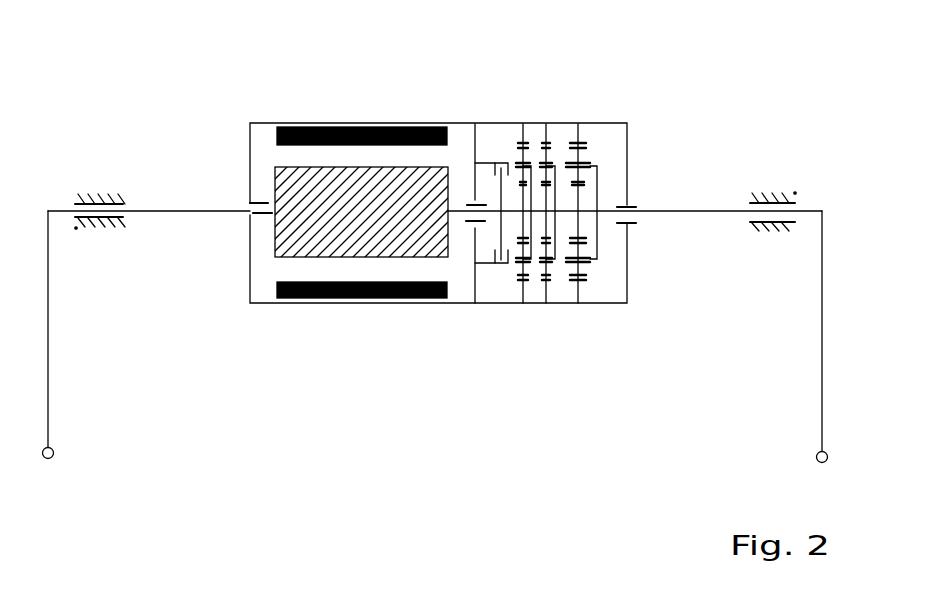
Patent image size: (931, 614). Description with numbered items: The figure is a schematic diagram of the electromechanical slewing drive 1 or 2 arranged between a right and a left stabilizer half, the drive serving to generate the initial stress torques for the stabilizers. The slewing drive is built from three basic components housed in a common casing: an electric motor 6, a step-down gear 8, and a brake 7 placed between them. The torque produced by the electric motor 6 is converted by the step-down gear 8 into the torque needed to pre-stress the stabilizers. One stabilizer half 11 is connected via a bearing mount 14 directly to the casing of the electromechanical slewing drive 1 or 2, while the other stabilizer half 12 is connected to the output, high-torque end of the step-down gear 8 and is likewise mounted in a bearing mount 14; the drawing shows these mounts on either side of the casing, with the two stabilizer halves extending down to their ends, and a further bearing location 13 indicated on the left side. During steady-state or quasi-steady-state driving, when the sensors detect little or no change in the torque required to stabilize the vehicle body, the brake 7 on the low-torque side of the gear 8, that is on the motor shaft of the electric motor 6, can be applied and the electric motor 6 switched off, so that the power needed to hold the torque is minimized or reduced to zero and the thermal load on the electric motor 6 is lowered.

The electromechanical slewing drive 1 is at (345, 185).
The electromechanical slewing drive 2 is at (247, 158).
The electric motor 6 is at (355, 192).
The brake 7 is at (504, 163).
The step-down gear 8 is at (533, 272).
The stabilizer half 11 is at (49, 320).
The stabilizer half 12 is at (820, 327).
The left bearing 13 is at (100, 224).
The bearing mount 14 is at (780, 228).